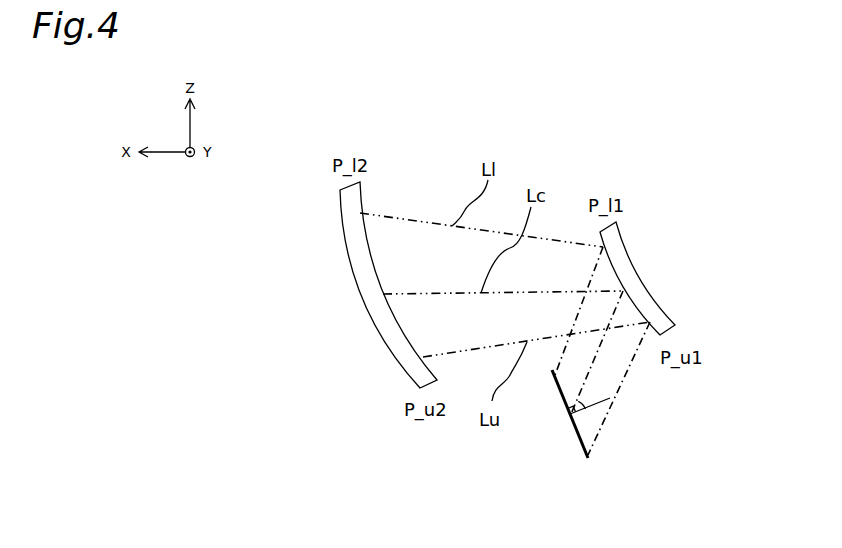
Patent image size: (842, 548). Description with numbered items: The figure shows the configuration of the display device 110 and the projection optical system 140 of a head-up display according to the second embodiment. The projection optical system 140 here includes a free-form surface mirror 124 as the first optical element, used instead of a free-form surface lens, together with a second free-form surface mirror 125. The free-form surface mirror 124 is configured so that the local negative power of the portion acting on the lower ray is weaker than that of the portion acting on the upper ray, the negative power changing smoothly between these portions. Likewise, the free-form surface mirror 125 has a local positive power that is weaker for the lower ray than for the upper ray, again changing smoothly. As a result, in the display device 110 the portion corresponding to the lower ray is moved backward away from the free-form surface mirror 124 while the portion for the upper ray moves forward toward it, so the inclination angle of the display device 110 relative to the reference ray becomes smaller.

The projection optical system 140 is at (322, 153).
The free-form surface mirror 124 is at (632, 258).
The free-form surface mirror 125 is at (372, 323).
The display device 110 is at (570, 420).